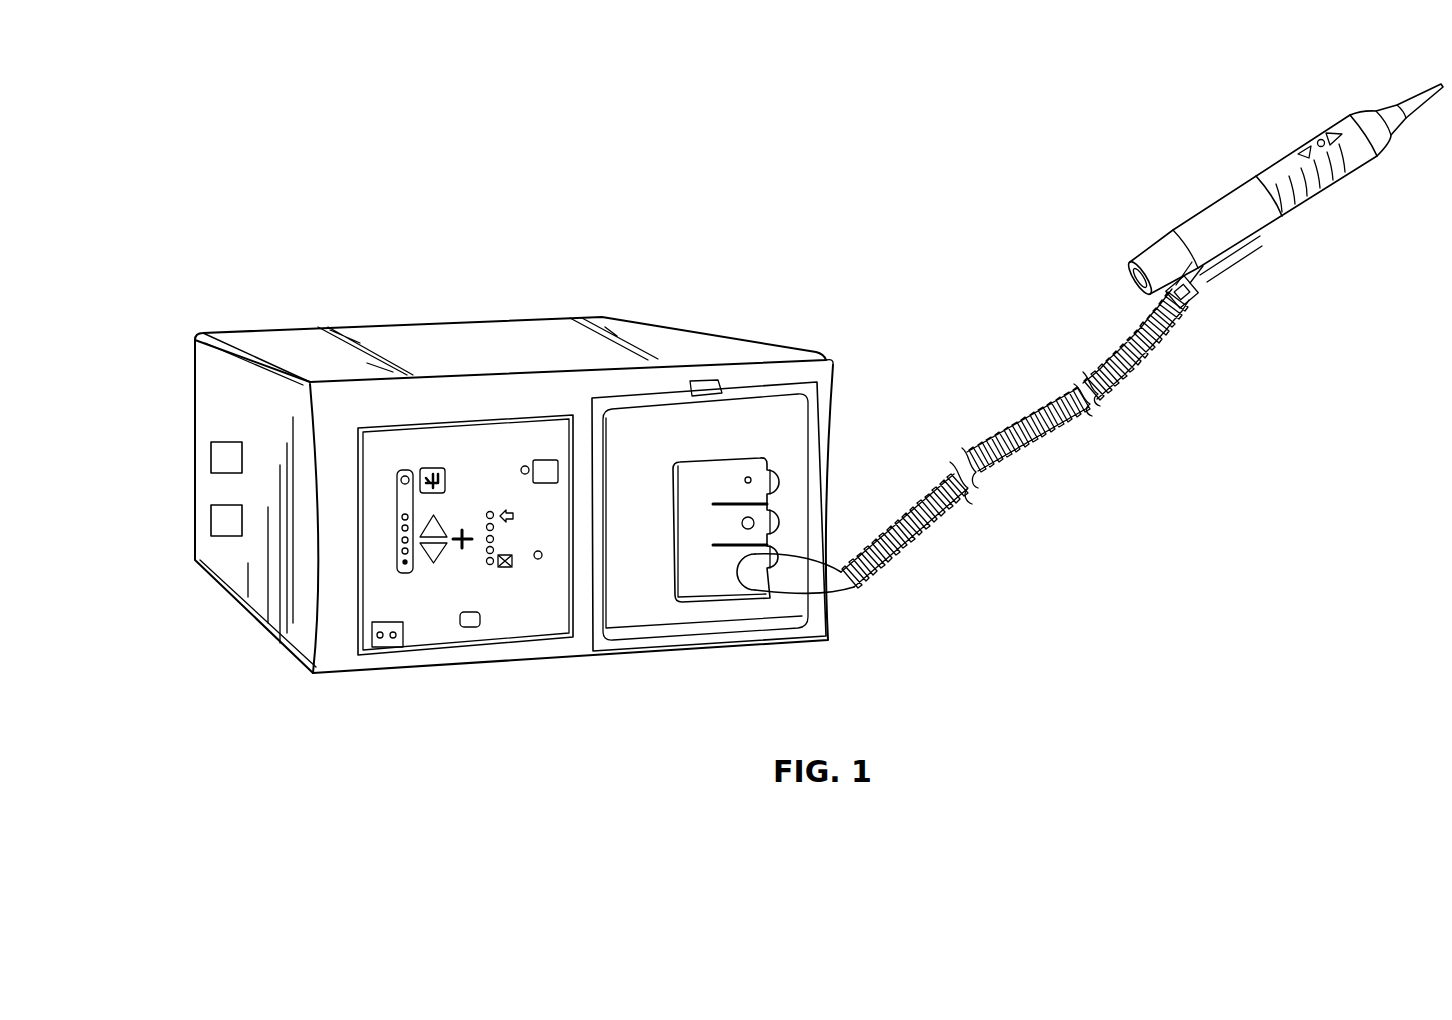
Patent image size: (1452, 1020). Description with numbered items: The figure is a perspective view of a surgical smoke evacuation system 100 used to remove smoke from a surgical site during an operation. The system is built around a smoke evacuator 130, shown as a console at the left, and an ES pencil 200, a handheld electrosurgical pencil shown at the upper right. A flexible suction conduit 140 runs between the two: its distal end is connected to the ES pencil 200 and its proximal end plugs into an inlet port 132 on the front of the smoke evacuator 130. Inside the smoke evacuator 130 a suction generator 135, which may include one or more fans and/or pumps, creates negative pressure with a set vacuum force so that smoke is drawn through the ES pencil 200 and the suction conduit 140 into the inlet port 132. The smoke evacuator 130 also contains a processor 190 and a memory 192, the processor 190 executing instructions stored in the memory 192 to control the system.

The surgical smoke evacuation system 100 is at (980, 192).
The smoke evacuator 130 is at (475, 320).
The suction generator 135 is at (572, 317).
The processor 190 is at (210, 457).
The memory 192 is at (210, 520).
The inlet port 132 is at (727, 585).
The suction conduit 140 is at (1132, 388).
The ES pencil 200 is at (1272, 165).